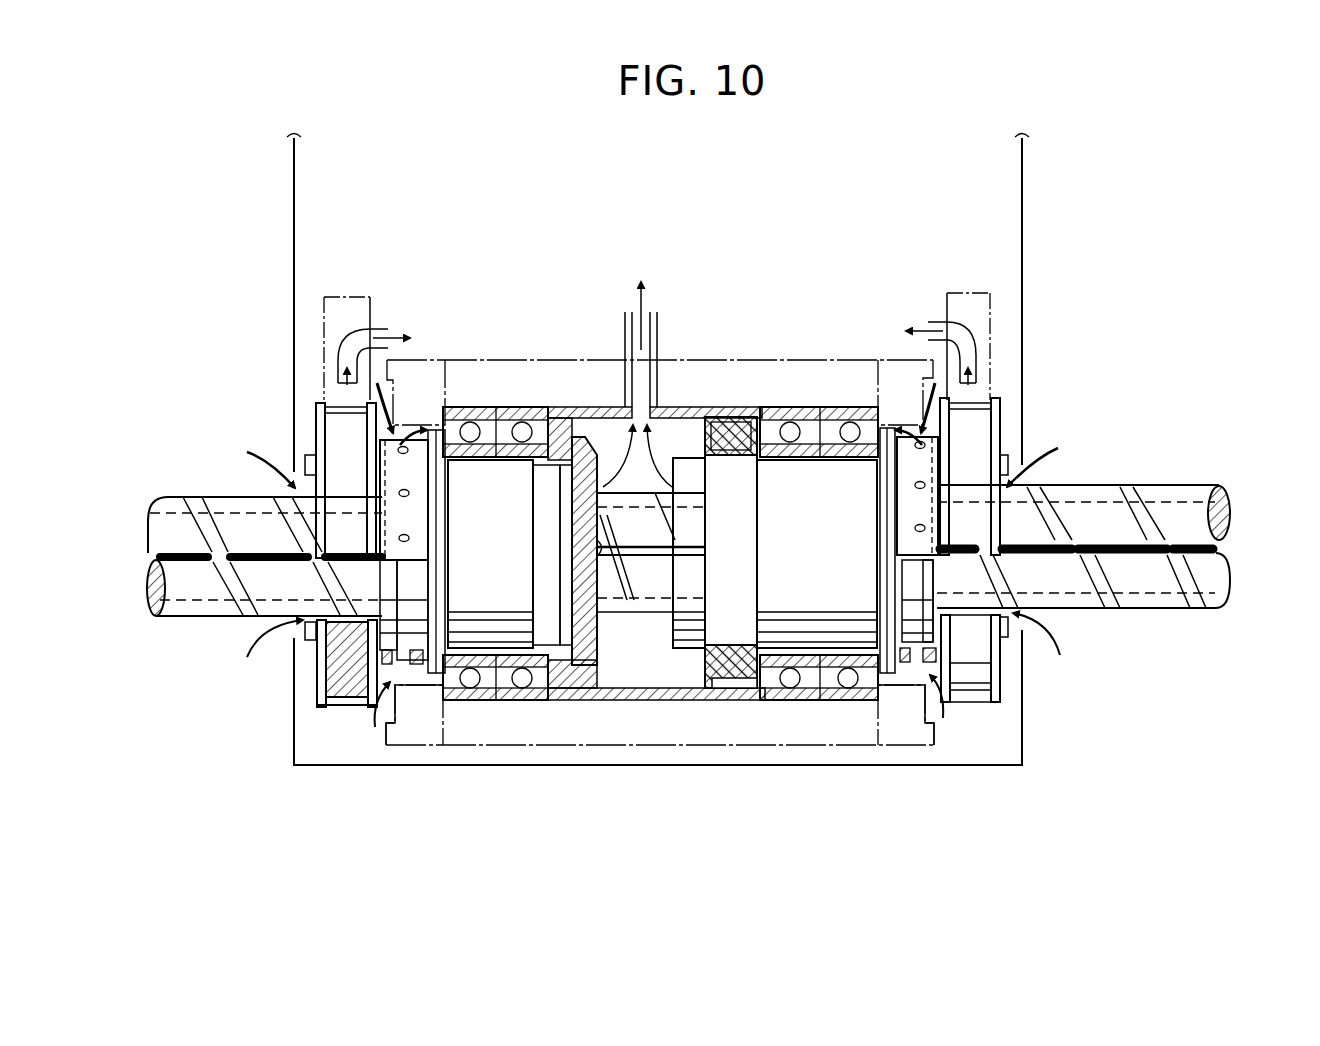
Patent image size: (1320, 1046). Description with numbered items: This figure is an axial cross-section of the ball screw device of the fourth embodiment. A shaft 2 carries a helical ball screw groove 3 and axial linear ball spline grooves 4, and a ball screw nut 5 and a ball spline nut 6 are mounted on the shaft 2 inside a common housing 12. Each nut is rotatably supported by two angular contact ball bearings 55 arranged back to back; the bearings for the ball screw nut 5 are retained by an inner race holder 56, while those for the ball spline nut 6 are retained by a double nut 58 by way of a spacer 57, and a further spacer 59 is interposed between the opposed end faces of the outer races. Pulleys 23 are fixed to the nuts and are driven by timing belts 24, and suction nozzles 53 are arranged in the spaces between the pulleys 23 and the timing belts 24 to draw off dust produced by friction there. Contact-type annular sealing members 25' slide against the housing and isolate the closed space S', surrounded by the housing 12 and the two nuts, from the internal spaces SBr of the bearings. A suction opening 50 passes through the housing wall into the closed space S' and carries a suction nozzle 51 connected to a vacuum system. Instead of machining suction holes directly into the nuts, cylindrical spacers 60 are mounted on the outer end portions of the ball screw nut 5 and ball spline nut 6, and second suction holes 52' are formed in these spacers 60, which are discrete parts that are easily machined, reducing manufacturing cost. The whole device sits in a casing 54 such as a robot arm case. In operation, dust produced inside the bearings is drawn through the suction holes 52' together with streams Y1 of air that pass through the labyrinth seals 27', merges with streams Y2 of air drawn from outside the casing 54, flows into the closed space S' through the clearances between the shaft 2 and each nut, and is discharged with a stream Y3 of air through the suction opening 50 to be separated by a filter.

The shaft 2 is at (198, 622).
The helical ball screw groove 3 is at (1142, 490).
The axial linear ball spline grooves 4 is at (1212, 545).
The ball screw nut 5 is at (487, 470).
The ball spline nut 6 is at (828, 470).
The housing 12 is at (798, 735).
The pulleys 23 is at (325, 700).
The timing belts 24 is at (337, 318).
The contact-type annular sealing members 25' is at (656, 763).
The labyrinth seals 27' is at (669, 756).
The suction opening 50 is at (640, 407).
The suction nozzle 51 is at (657, 320).
The second suction holes 52' is at (644, 465).
The suction nozzles 53 is at (378, 330).
The casing 54 is at (1025, 184).
The angular contact ball bearings 55 is at (512, 700).
The inner race holder 56 is at (562, 700).
The spacer 57 is at (760, 700).
The double nut 58 is at (702, 668).
The spacer 59 is at (736, 690).
The cylindrical spacers 60 is at (398, 477).
The internal spaces of the bearings SBr is at (540, 410).
The closed space S' is at (651, 574).
The streams of air through labyrinth seals Y1 is at (657, 711).
The streams of air from outside the casing Y2 is at (659, 656).
The stream of air through suction opening Y3 is at (637, 457).